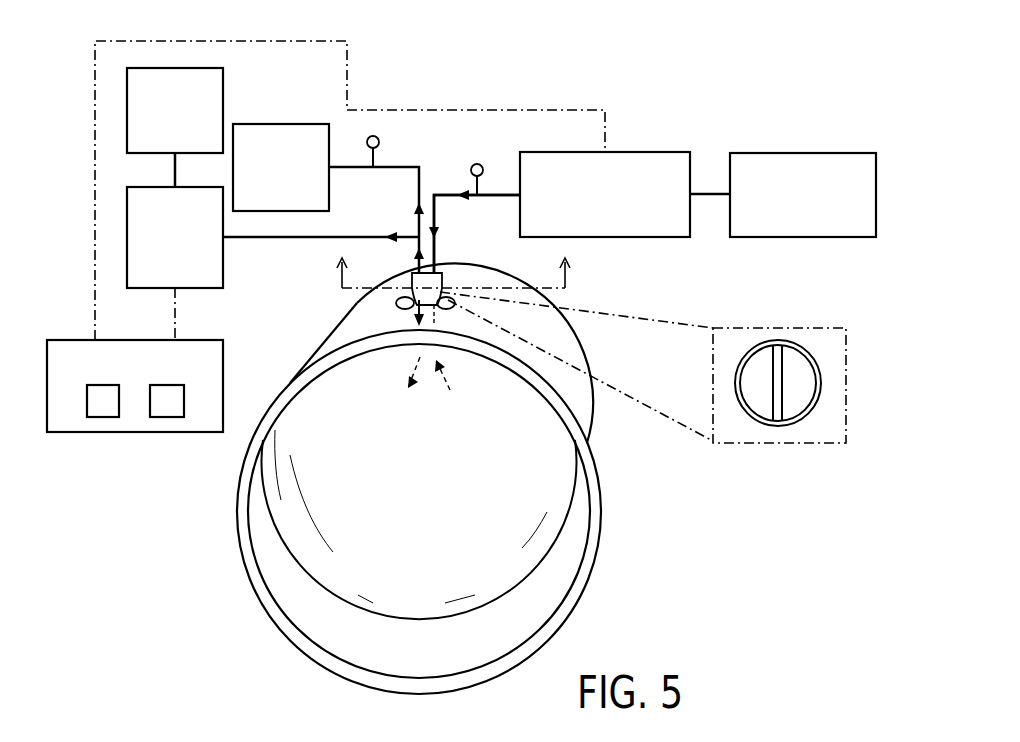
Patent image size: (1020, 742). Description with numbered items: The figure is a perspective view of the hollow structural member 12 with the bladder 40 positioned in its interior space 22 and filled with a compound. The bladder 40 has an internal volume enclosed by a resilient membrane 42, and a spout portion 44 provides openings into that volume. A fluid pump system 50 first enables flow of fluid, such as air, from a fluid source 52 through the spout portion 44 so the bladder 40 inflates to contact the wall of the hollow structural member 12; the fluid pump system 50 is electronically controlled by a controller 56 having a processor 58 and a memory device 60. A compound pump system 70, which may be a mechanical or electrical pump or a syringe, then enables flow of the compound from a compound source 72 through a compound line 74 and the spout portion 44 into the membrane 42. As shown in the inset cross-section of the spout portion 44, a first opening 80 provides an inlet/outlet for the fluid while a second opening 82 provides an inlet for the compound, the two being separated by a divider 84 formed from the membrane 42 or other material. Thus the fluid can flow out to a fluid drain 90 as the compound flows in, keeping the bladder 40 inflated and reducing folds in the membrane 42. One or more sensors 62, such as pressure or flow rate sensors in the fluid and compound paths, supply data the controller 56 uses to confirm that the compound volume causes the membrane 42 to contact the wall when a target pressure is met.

The hollow structural member 12 is at (594, 620).
The interior space 22 is at (342, 638).
The bladder 40 is at (527, 507).
The membrane 42 is at (532, 462).
The spout portion 44 is at (823, 363).
The fluid pump system 50 is at (223, 252).
The fluid source 52 is at (172, 68).
The controller 56 is at (193, 340).
The processor 58 is at (100, 417).
The memory device 60 is at (165, 417).
The sensors 62 is at (380, 145).
The compound pump system 70 is at (603, 237).
The compound source 72 is at (803, 237).
The compound line 74 is at (497, 198).
The first opening 80 is at (758, 397).
The second opening 82 is at (797, 400).
The divider 84 is at (783, 384).
The fluid drain 90 is at (279, 124).